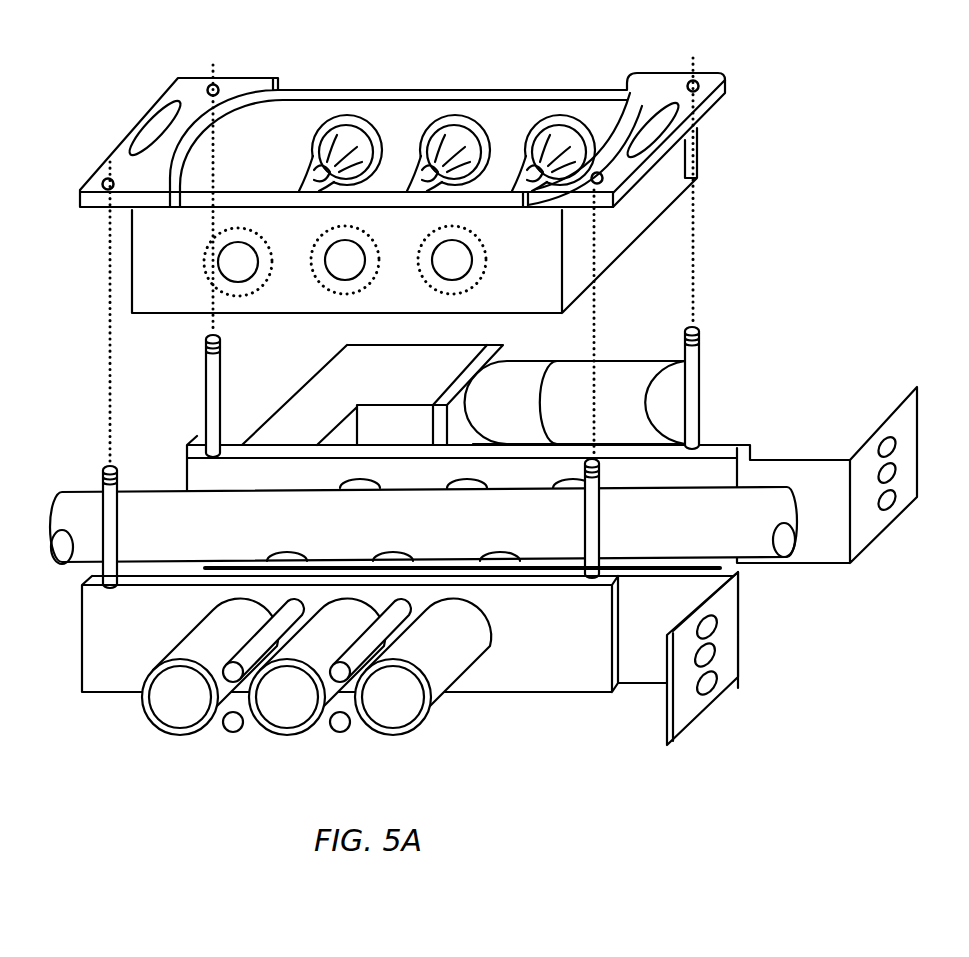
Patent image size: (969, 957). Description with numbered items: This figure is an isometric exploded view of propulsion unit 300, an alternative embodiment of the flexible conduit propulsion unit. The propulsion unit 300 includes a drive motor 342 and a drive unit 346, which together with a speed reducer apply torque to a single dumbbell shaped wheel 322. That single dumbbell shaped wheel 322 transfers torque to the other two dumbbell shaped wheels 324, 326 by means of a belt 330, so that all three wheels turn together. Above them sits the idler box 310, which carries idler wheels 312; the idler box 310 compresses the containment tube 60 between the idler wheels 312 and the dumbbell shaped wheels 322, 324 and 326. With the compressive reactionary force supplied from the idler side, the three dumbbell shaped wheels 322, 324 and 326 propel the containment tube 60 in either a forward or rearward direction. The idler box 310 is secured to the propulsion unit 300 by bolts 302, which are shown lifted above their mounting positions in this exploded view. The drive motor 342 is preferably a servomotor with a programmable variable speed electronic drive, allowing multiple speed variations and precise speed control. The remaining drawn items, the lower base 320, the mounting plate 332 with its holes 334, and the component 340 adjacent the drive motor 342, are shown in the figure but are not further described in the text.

The propulsion unit 300 is at (808, 669).
The bolts 302 is at (205, 350).
The idler box 310 is at (93, 287).
The idler wheels 312 is at (548, 113).
The base block 320 is at (108, 703).
The dumbbell shaped wheel 322 is at (283, 555).
The dumbbell shaped wheel 324 is at (383, 553).
The dumbbell shaped wheel 326 is at (503, 553).
The belt 330 is at (195, 737).
The mounting plate 332 is at (685, 713).
The mounting holes 334 is at (715, 653).
The first cylinder 340 is at (607, 358).
The drive motor 342 is at (520, 362).
The drive unit 346 is at (325, 365).
The containment tube 60 is at (717, 483).